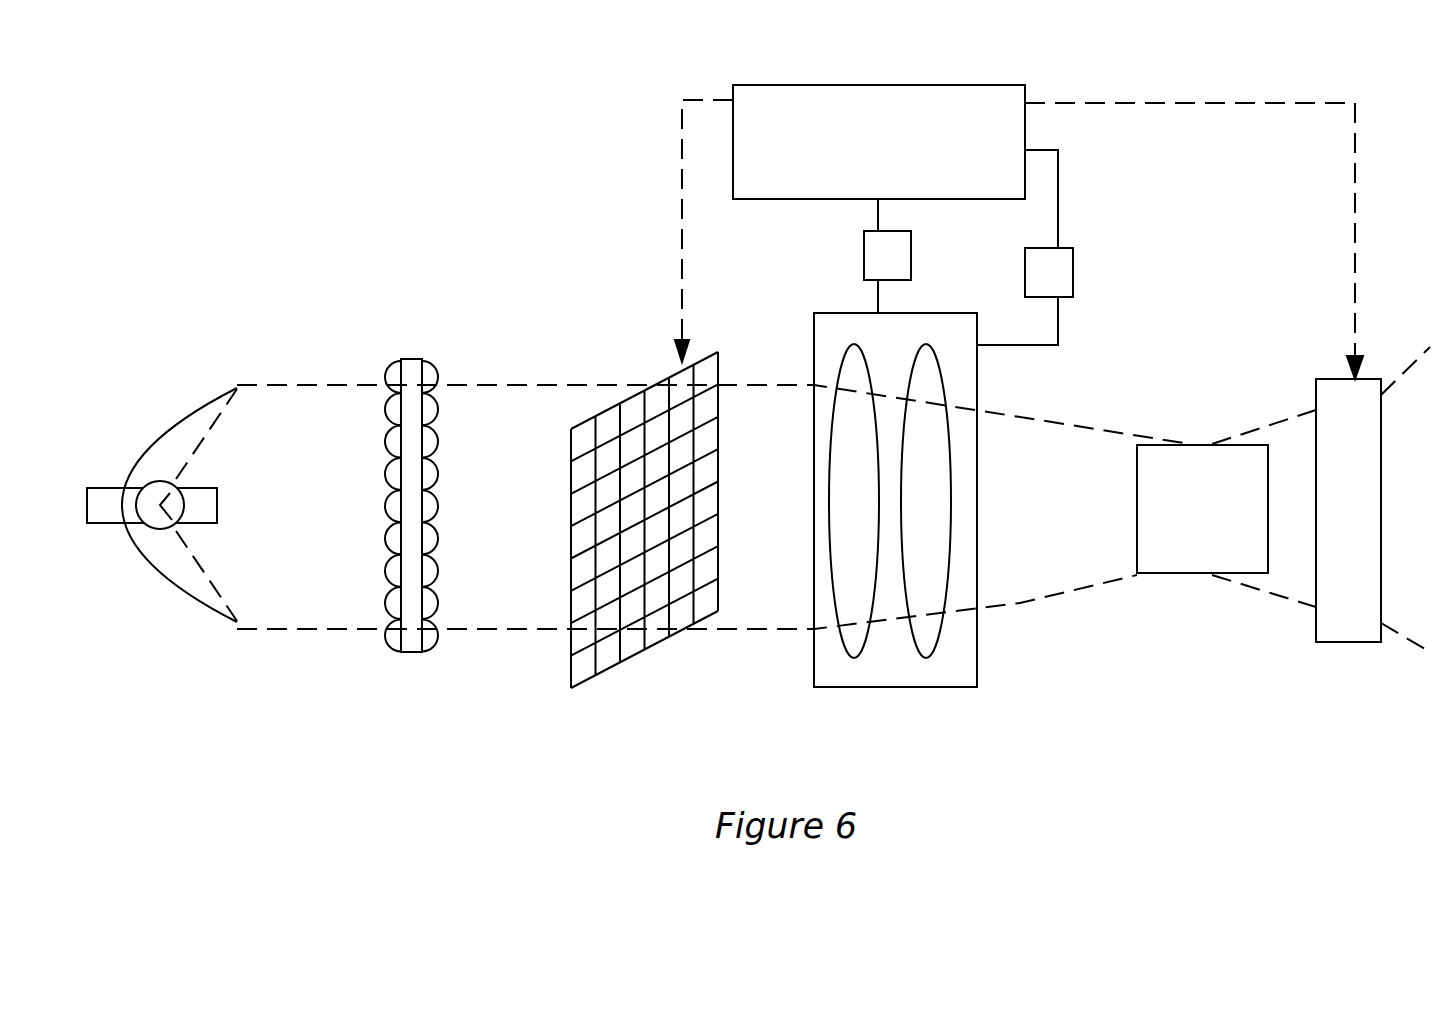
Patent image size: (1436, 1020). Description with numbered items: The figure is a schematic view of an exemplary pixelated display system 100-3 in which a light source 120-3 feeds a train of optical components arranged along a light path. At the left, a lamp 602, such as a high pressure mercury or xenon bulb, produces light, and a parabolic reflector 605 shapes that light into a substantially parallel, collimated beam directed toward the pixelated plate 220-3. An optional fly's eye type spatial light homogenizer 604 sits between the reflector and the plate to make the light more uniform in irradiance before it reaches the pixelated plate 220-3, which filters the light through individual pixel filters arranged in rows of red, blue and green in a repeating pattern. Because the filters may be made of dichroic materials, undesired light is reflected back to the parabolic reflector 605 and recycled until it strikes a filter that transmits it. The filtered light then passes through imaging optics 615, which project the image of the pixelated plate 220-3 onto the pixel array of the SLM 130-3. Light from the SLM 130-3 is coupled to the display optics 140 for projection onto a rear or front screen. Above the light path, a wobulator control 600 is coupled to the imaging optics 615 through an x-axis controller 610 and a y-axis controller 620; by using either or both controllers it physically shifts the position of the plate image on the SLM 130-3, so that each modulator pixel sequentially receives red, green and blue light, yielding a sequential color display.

The display system 100-3 is at (282, 262).
The light source 120-3 is at (157, 468).
The lamp 602 is at (157, 531).
The parabolic reflector 605 is at (218, 388).
The spatial light homogenizer 604 is at (406, 334).
The pixelated plate 220-3 is at (640, 657).
The imaging optics 615 is at (880, 688).
The wobulator control 600 is at (902, 172).
The y-axis controller 620 is at (864, 255).
The x-axis controller 610 is at (1073, 275).
The SLM 130-3 is at (1195, 573).
The display optics 140 is at (1345, 642).